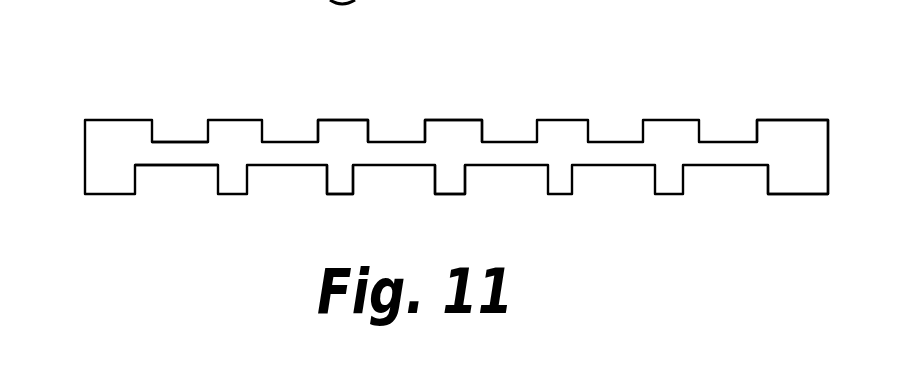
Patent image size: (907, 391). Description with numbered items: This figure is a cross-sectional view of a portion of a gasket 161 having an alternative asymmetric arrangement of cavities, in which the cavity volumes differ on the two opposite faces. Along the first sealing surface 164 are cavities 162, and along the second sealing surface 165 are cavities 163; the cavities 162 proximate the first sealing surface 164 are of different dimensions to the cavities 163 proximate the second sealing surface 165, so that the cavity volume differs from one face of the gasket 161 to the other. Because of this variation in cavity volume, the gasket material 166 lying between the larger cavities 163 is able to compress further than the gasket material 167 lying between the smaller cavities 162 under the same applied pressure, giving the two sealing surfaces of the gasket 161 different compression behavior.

The gasket 161 is at (542, 89).
The cavities 162 is at (177, 140).
The cavities 163 is at (190, 171).
The first sealing surface 164 is at (786, 118).
The second sealing surface 165 is at (800, 195).
The gasket material 166 is at (455, 194).
The gasket material 167 is at (455, 119).